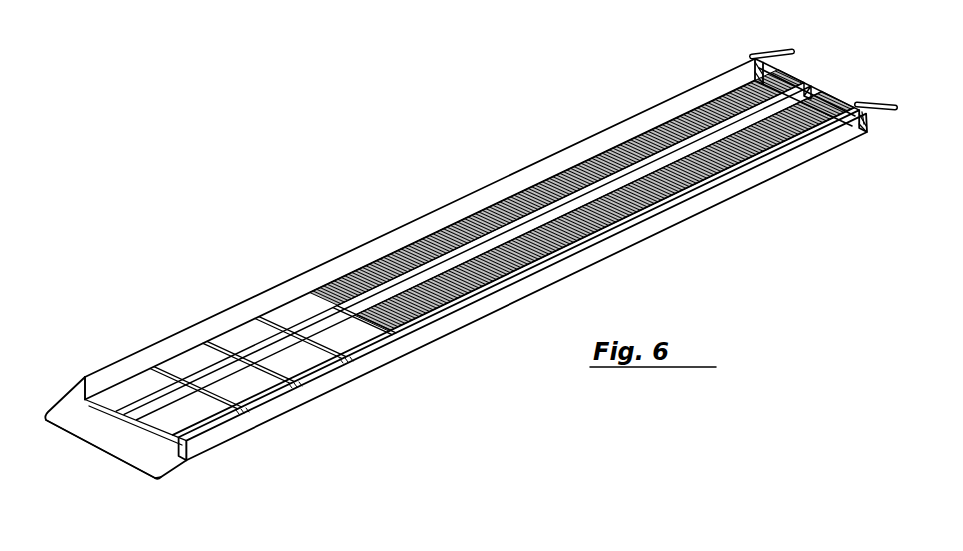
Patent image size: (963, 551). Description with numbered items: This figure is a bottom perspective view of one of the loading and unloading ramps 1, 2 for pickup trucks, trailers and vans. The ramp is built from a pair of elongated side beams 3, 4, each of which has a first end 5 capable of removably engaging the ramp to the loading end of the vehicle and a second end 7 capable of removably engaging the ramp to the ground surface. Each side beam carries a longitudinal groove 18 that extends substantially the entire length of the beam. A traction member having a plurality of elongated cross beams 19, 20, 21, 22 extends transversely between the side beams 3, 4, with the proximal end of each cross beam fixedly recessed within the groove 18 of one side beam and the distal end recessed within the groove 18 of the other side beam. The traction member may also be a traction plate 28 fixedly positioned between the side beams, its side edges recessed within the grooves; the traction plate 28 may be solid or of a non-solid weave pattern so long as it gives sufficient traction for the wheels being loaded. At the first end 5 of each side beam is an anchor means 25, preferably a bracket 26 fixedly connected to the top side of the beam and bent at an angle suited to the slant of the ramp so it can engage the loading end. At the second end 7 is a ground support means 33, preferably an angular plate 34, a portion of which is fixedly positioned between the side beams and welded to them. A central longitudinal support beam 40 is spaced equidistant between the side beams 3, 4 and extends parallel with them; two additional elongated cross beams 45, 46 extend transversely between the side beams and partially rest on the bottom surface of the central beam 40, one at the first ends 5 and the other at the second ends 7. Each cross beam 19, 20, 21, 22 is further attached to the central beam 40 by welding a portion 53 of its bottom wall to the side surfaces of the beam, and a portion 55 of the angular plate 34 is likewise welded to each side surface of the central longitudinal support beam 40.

The loading and unloading ramp 1 is at (480, 268).
The loading and unloading ramp 2 is at (480, 268).
The elongated side beam 3 is at (618, 248).
The elongated side beam 4 is at (560, 158).
The first end 5 is at (759, 61).
The second end 7 is at (70, 388).
The longitudinal groove 18 is at (345, 345).
The elongated cross beam 19 is at (150, 392).
The elongated cross beam 20 is at (215, 370).
The elongated cross beam 21 is at (268, 345).
The elongated cross beam 22 is at (827, 92).
The anchor means 25 is at (876, 120).
The bracket 26 is at (757, 54).
The traction plate 28 is at (698, 192).
The ground support means 33 is at (136, 466).
The angular plate 34 is at (82, 426).
The central longitudinal support beam 40 is at (480, 292).
The additional elongated cross beam 45 is at (152, 470).
The additional elongated cross beam 46 is at (830, 126).
The portion of bottom wall 53 is at (200, 440).
The portion of angular plate 55 is at (112, 418).